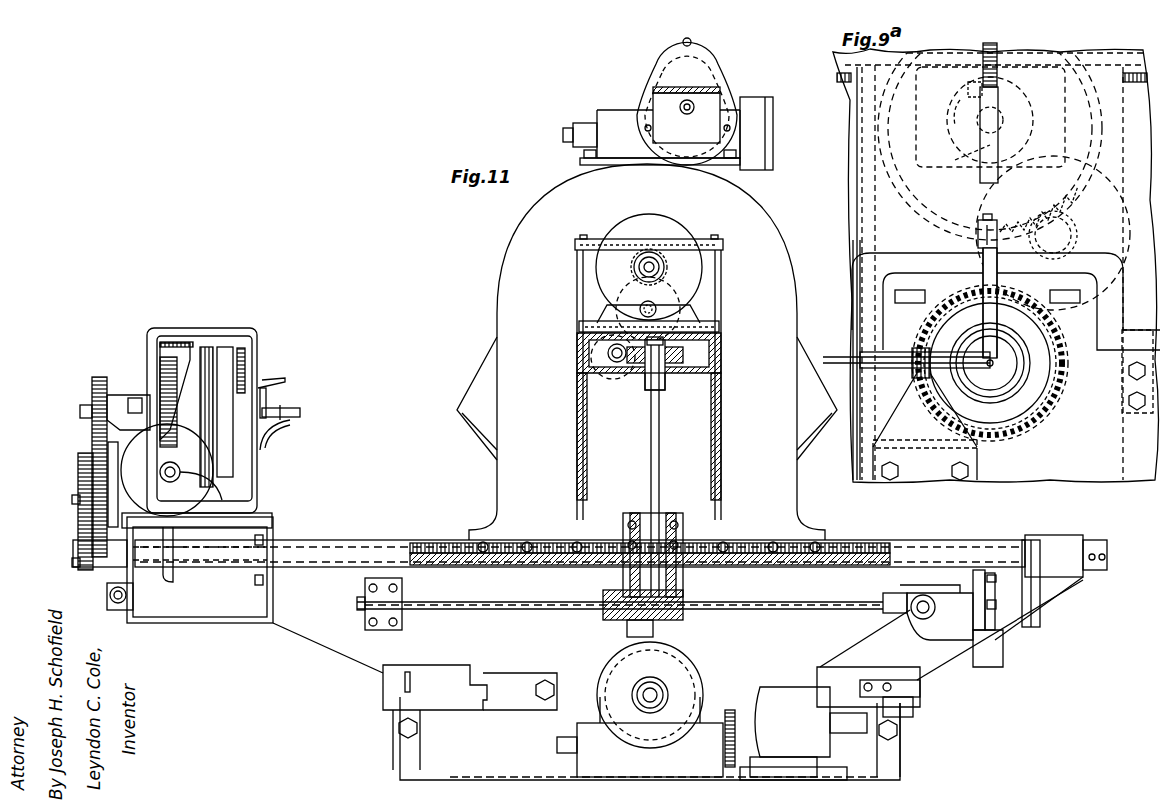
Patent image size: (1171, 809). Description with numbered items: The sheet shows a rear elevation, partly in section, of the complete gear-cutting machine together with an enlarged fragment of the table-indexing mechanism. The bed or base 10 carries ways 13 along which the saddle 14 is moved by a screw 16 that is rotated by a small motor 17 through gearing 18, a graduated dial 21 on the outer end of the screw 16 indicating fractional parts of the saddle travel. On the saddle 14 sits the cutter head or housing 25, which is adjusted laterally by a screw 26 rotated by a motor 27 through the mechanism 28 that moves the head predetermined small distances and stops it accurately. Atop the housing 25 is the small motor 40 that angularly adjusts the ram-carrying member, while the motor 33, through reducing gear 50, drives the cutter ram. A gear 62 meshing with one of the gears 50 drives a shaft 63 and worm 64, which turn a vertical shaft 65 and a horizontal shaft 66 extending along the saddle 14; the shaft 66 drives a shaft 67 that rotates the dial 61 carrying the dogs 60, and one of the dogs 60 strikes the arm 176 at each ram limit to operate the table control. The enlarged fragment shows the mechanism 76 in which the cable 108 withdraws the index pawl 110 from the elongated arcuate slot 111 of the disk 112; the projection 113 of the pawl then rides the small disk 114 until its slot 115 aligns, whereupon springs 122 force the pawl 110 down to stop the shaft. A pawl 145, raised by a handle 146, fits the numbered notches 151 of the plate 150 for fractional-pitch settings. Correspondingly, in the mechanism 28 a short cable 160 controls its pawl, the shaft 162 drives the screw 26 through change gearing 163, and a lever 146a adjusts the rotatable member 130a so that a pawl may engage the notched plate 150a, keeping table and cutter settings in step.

In FIG. 11, the bed or base 10 is at (410, 748).
In FIG. 11, the ways 13 is at (430, 672).
In FIG. 11, the saddle 14 is at (1012, 617).
In FIG. 11, the screw 16 is at (630, 678).
In FIG. 11, the motor 17 is at (825, 742).
In FIG. 11, the gearing 18 is at (730, 710).
In FIG. 11, the graduated dial 21 is at (662, 683).
In FIG. 11, the cutter head or housing 25 is at (780, 343).
In FIG. 11, the screw 26 is at (298, 548).
In FIG. 11, the motor 27 is at (195, 492).
In FIG. 11, the mechanism 28 is at (293, 472).
In FIG. 11, the motor 33 is at (665, 222).
In FIG. 11, the motor 40 is at (663, 48).
In FIG. 11, the reducing gear 50 is at (636, 266).
In FIG. 11, the dogs 60 is at (991, 573).
In FIG. 11, the dial 61 is at (980, 570).
In FIG. 11, the gear 62 is at (617, 380).
In FIG. 11, the shaft 63 is at (584, 370).
In FIG. 11, the worm 64 is at (605, 353).
In FIG. 11, the vertical shaft 65 is at (655, 446).
In FIG. 11, the horizontal shaft 66 is at (540, 608).
In FIG. 11, the shaft 67 is at (915, 598).
In FIG. 9A, the mechanism 76 is at (848, 140).
In FIG. 9A, the cable 108 is at (840, 368).
In FIG. 9A, the index pawl 110 is at (975, 150).
In FIG. 9A, the elongated arcuate slot 111 is at (1090, 200).
In FIG. 9A, the disk 112 is at (878, 230).
In FIG. 9A, the projection 113 is at (968, 80).
In FIG. 9A, the small disk 114 is at (1005, 100).
In FIG. 9A, the slot 115 is at (965, 100).
In FIG. 9A, the springs 122 is at (995, 47).
In FIG. 11, the rotatable member 130a is at (225, 355).
In FIG. 9A, the pawl 145 is at (983, 280).
In FIG. 9A, the handle 146 is at (978, 236).
In FIG. 11, the lever 146a is at (278, 388).
In FIG. 9A, the plate 150 is at (1012, 400).
In FIG. 11, the notched plate 150a is at (290, 430).
In FIG. 9A, the notches 151 is at (945, 312).
In FIG. 11, the cable 160 is at (300, 413).
In FIG. 11, the shaft 162 is at (112, 405).
In FIG. 11, the change gearing 163 is at (78, 520).
In FIG. 11, the arm 176 is at (955, 670).